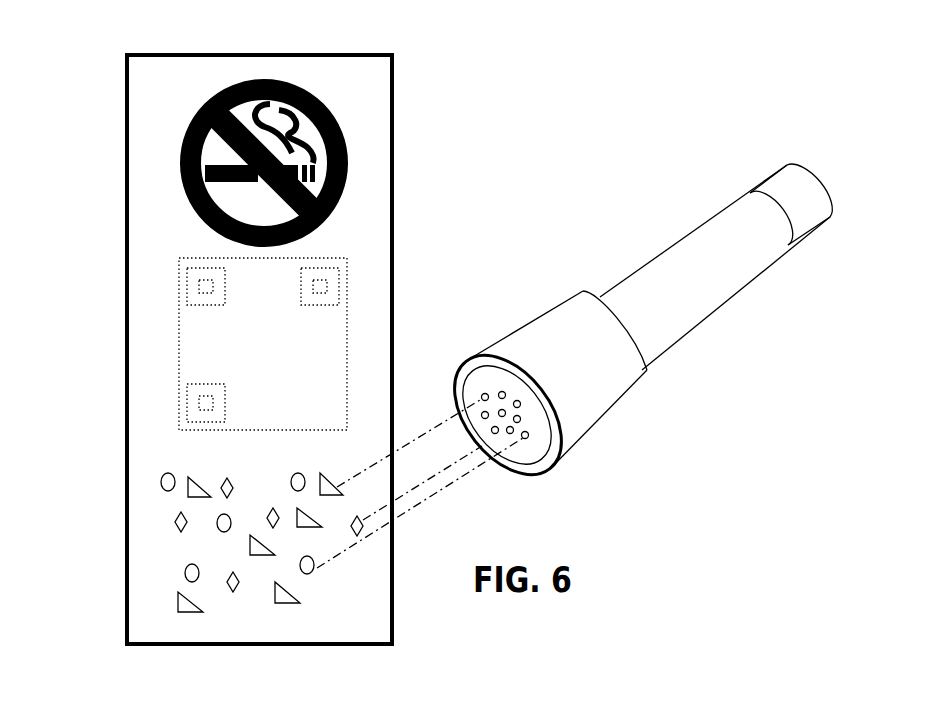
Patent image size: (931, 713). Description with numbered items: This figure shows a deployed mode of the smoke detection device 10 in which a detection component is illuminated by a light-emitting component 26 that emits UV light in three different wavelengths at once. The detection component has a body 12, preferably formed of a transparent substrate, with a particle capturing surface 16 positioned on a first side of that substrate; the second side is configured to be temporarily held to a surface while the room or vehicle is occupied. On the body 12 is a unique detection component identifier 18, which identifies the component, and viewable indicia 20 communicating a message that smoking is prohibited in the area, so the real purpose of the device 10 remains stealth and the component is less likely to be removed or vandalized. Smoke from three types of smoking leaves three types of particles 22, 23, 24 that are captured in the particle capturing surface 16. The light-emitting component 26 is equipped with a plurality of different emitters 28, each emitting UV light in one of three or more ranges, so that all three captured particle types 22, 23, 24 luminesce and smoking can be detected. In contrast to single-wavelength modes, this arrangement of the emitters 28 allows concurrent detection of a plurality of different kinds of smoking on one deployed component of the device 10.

The device 10 is at (632, 287).
The body 12 is at (395, 108).
The particle capturing surface 16 is at (360, 621).
The detection component identifier 18 is at (336, 290).
The viewable indicia 20 is at (313, 115).
The captured particle 22 is at (178, 524).
The captured particle 23 is at (180, 603).
The captured particle 24 is at (163, 476).
The light-emitting component 26 is at (707, 230).
The emitters 28 is at (525, 435).